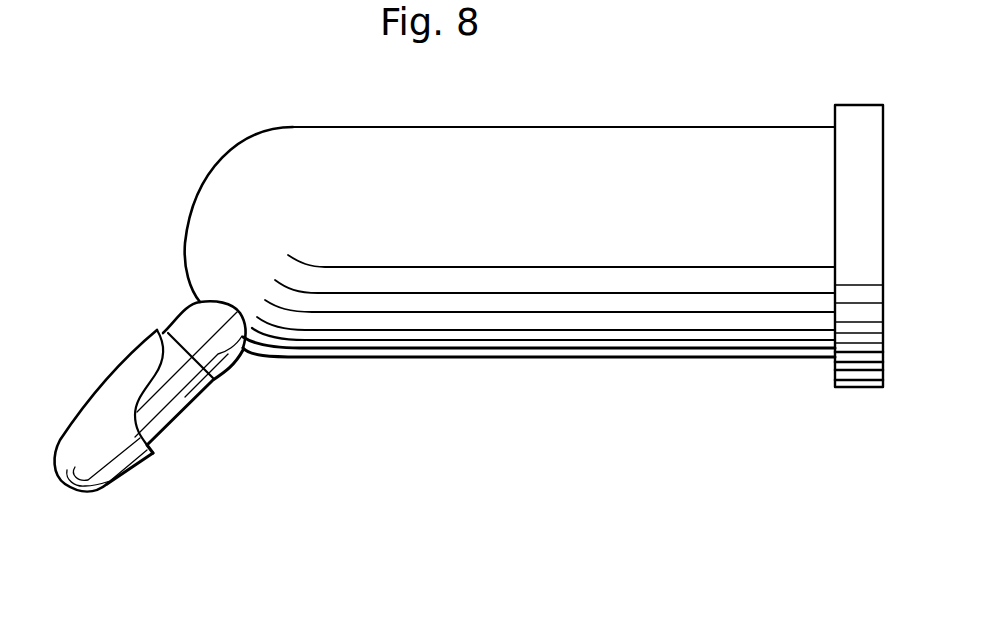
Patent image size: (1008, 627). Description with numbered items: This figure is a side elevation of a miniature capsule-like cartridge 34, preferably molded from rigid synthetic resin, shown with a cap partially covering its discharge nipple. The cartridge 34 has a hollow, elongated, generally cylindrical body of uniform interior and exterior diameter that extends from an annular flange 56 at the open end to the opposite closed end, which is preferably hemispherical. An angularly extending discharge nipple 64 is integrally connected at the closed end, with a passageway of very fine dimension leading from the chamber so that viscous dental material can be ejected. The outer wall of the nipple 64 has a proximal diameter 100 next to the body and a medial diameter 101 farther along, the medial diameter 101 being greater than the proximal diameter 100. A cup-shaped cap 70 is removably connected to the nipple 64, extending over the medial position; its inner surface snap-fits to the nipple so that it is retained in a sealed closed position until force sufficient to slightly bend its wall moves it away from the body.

The cartridge 34 is at (508, 143).
The annular flange 56 is at (857, 117).
The discharge nipple 64 is at (217, 380).
The cap 70 is at (118, 480).
The proximal diameter 100 is at (230, 356).
The medial diameter 101 is at (188, 403).